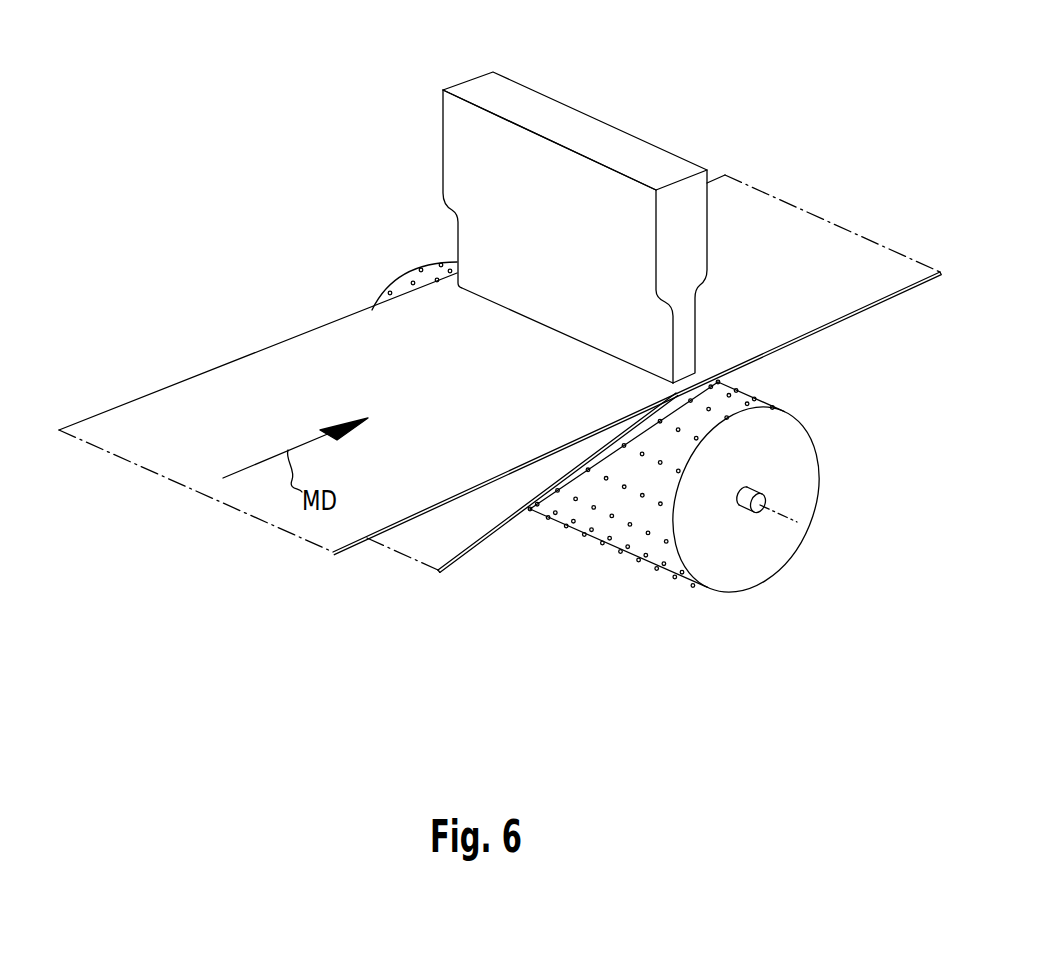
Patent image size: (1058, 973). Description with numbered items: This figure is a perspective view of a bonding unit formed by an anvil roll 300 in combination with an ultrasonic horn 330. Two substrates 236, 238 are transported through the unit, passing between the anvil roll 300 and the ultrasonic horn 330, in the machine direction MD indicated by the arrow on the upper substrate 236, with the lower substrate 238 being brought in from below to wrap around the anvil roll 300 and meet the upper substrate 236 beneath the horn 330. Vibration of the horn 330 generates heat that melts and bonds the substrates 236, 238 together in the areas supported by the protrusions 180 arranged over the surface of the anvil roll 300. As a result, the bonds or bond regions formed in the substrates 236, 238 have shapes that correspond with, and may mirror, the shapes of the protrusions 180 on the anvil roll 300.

The protrusions 180 is at (747, 391).
The substrate 236 is at (267, 376).
The substrate 238 is at (445, 535).
The anvil roll 300 is at (655, 568).
The ultrasonic horn 330 is at (520, 84).